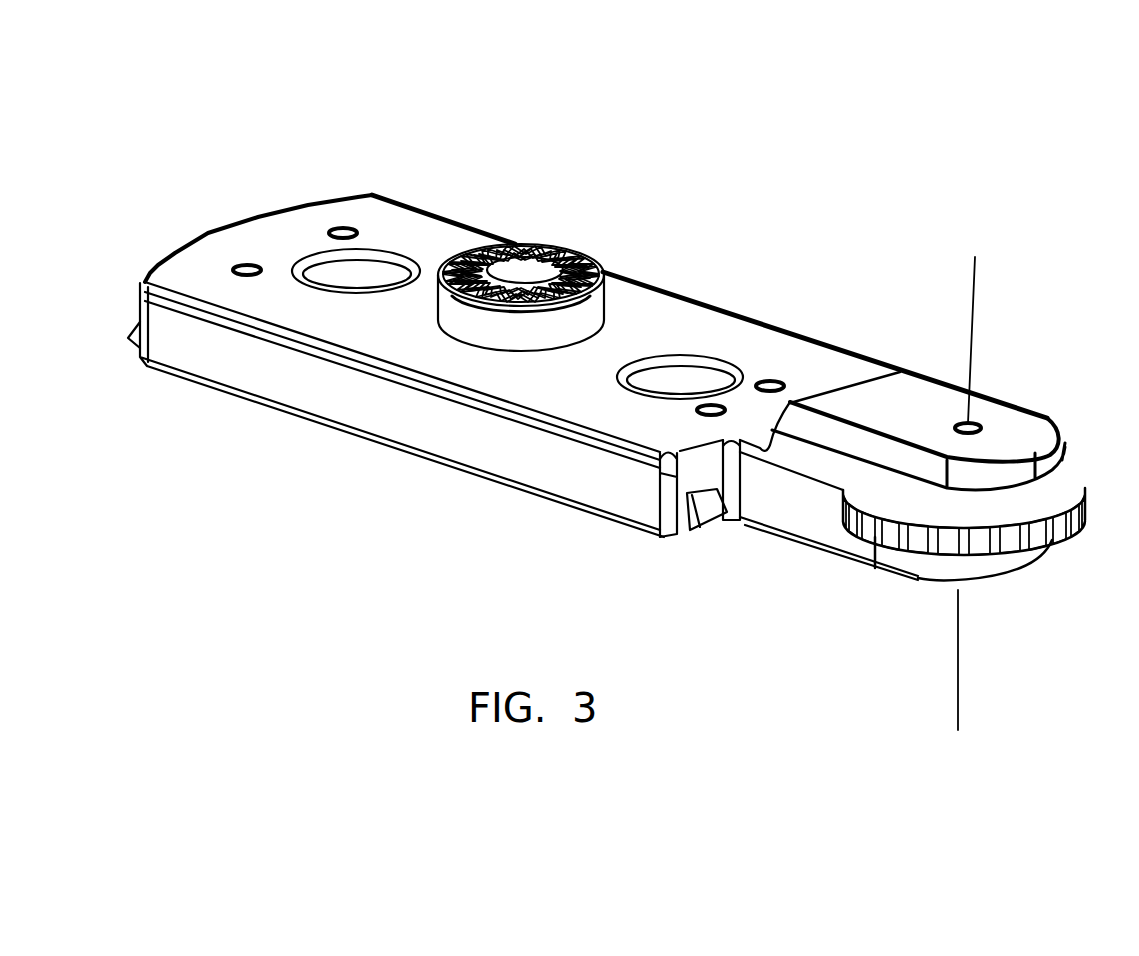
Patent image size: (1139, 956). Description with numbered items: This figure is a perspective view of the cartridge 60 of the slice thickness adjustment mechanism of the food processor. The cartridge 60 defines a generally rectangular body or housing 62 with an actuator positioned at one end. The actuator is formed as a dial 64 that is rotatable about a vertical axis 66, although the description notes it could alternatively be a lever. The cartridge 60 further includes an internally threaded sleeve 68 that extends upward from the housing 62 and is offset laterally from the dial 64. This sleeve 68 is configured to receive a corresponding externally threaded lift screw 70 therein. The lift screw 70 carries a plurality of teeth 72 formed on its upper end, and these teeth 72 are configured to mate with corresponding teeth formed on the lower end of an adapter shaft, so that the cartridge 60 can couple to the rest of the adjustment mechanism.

The cartridge 60 is at (773, 83).
The housing 62 is at (390, 418).
The dial 64 is at (1048, 495).
The vertical axis 66 is at (973, 294).
The internally threaded sleeve 68 is at (588, 308).
The lift screw 70 is at (514, 212).
The teeth 72 is at (540, 246).